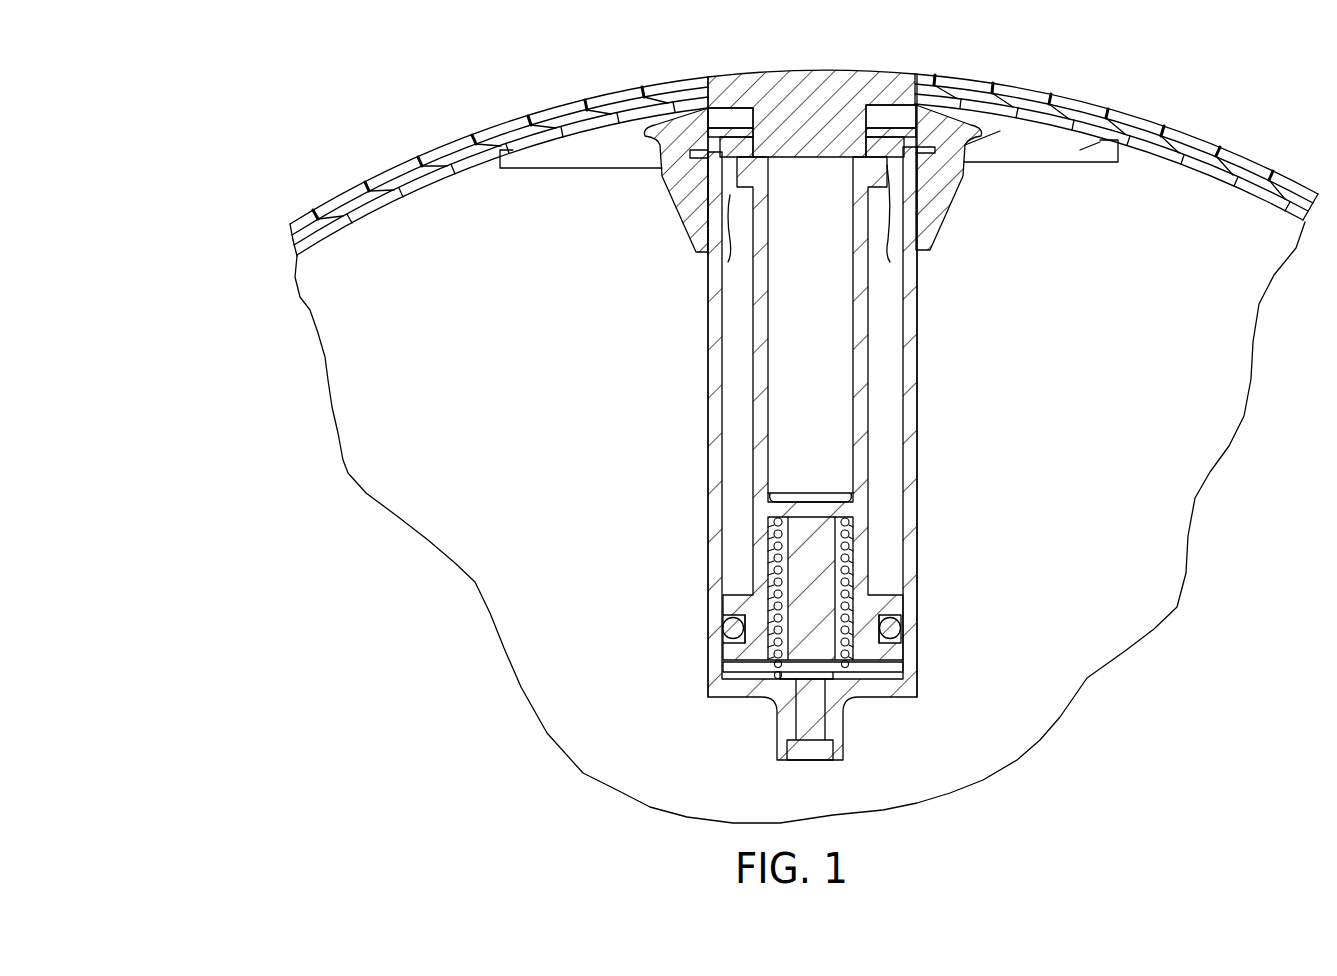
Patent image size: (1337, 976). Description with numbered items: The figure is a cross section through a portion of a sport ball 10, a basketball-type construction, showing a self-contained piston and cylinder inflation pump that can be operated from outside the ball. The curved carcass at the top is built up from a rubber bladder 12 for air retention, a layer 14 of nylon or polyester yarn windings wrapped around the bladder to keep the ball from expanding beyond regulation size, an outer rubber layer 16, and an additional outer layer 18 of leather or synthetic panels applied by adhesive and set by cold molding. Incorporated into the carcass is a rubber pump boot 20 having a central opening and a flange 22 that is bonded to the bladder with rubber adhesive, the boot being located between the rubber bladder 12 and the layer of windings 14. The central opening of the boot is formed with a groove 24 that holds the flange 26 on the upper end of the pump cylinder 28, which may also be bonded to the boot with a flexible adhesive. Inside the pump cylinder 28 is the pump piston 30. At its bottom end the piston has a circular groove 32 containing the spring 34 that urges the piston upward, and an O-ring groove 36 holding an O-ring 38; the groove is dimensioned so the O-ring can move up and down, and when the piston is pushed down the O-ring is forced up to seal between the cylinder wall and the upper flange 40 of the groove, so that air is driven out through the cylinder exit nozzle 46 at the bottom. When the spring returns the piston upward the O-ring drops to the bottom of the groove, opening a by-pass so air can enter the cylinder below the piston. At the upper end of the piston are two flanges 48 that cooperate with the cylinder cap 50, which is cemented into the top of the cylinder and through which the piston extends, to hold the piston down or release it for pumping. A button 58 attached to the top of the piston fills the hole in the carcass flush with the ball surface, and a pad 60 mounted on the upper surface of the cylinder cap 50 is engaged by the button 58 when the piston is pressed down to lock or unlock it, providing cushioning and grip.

The sport ball 10 is at (462, 610).
The rubber bladder 12 is at (380, 210).
The layer of windings 14 is at (292, 258).
The outer rubber layer 16 is at (292, 236).
The outer layer 18 is at (353, 186).
The pump boot 20 is at (963, 183).
The flange 22 is at (1072, 145).
The groove 24 is at (690, 190).
The flange 26 is at (914, 158).
The pump cylinder 28 is at (915, 347).
The pump piston 30 is at (862, 458).
The circular groove 32 is at (850, 522).
The spring 34 is at (858, 556).
The O-ring groove 36 is at (897, 665).
The O-ring 38 is at (902, 622).
The upper flange 40 is at (890, 600).
The cylinder exit nozzle 46 is at (848, 742).
The flanges 48 is at (890, 262).
The cylinder cap 50 is at (712, 262).
The button 58 is at (806, 70).
The pad 60 is at (905, 127).